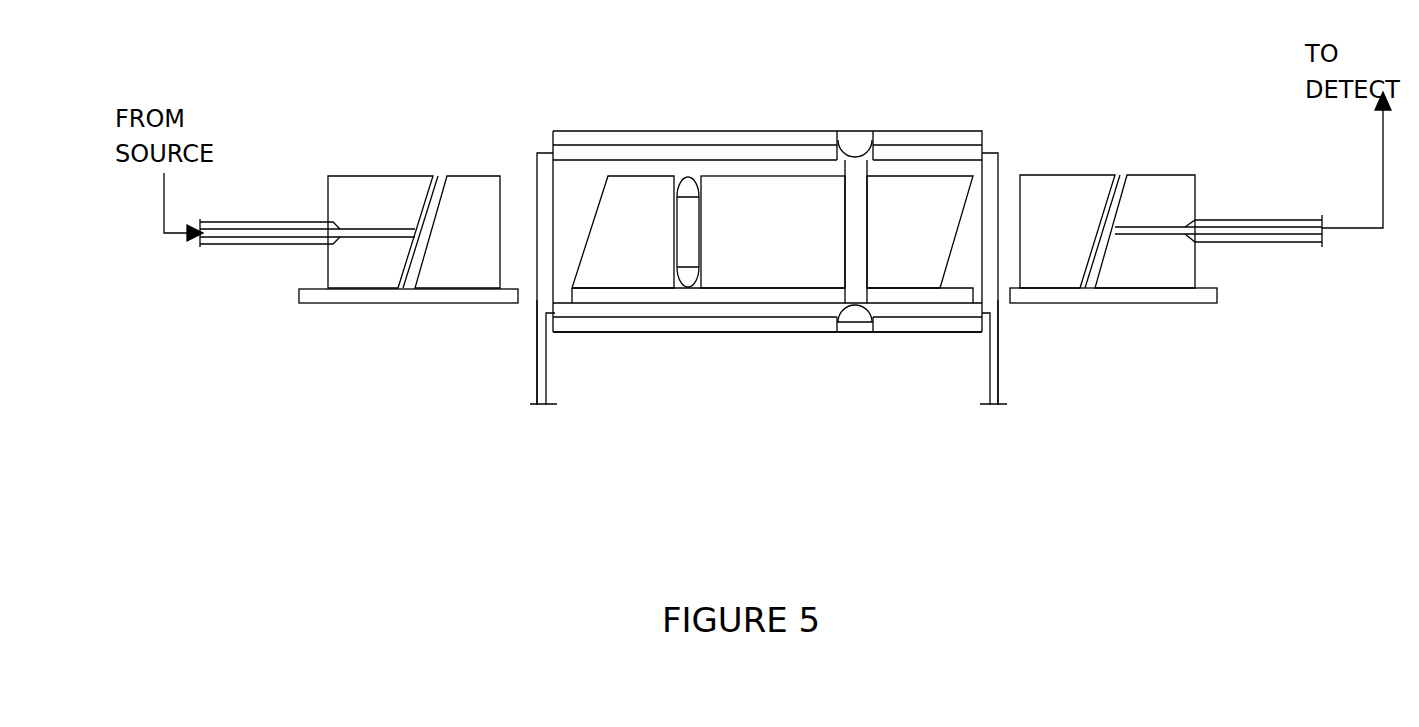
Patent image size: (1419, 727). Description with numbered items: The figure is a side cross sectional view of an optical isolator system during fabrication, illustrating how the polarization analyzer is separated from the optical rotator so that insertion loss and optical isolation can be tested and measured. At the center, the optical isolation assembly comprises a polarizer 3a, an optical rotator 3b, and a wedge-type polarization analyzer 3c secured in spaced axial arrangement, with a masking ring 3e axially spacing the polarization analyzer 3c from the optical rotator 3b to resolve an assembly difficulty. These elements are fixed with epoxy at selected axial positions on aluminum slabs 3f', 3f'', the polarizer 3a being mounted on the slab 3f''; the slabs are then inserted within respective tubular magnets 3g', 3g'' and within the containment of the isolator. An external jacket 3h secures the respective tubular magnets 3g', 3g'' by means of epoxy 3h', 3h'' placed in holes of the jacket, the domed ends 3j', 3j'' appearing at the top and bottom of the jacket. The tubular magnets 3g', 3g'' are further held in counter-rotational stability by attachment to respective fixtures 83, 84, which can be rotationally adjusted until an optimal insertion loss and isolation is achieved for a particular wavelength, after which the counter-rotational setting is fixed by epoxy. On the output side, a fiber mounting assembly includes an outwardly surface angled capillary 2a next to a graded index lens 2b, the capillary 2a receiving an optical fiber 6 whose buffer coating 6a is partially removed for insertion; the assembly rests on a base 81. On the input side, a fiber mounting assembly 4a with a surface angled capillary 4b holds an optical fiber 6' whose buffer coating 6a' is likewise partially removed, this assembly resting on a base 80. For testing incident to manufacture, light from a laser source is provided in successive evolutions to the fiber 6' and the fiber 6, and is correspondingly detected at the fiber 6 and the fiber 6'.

The surface angled capillary 2a is at (1168, 185).
The graded index lens 2b is at (1058, 278).
The polarizer 3a is at (947, 193).
The optical rotator 3b is at (777, 195).
The polarization analyzer 3c is at (637, 185).
The masking ring 3e is at (683, 187).
The slab 3f' is at (708, 354).
The slab 3f'' is at (920, 366).
The tubular magnet 3g' is at (695, 366).
The tubular magnet 3g'' is at (927, 392).
The external jacket 3h is at (777, 397).
The epoxy 3h' is at (861, 363).
The epoxy 3h'' is at (835, 180).
The lower dome bearing 3j' is at (843, 379).
The upper dome bearing 3j'' is at (890, 109).
The fiber mounting assembly 4a is at (463, 273).
The surface angled capillary 4b is at (373, 185).
The input optical fiber 6 is at (1228, 213).
The input optical fiber 6' is at (307, 175).
The buffer coating 6a is at (1253, 201).
The buffer coating 6a' is at (270, 199).
The input base plate 80 is at (363, 300).
The output base plate 81 is at (1213, 297).
The fixture 83 is at (537, 380).
The fixture 84 is at (1000, 380).